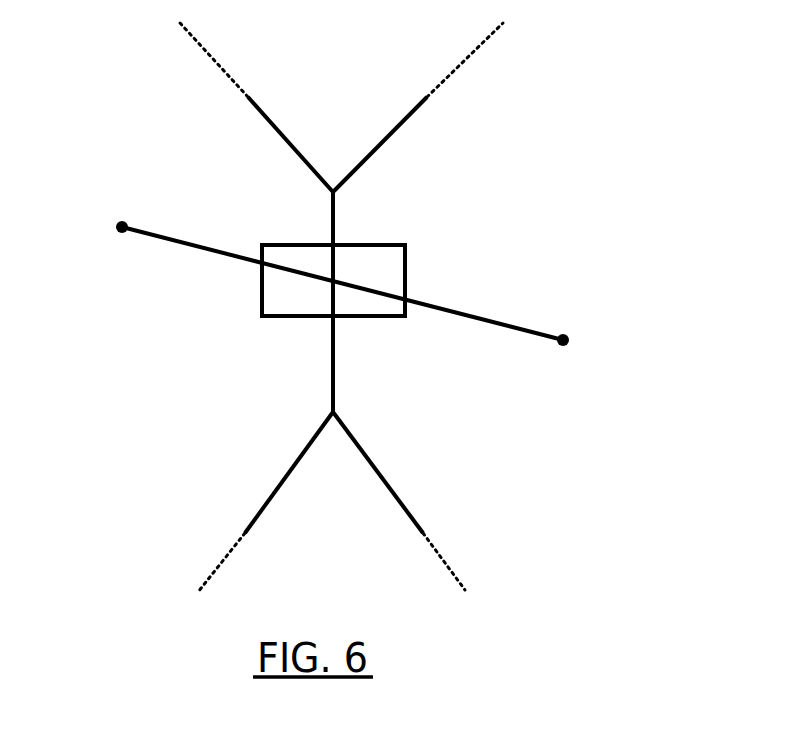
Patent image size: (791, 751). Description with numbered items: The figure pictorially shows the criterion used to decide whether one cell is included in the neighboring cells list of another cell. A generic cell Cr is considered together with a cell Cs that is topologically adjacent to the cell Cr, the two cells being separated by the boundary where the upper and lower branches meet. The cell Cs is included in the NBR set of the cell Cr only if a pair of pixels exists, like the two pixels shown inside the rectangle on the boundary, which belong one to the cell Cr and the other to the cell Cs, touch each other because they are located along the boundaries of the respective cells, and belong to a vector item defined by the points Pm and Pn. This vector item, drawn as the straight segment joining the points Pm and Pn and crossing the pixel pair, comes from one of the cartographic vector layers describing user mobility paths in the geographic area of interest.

The vector item endpoint Pm is at (317, 278).
The vector item endpoint Pn is at (583, 357).
The generic cell Cr is at (175, 140).
The topologically adjacent cell Cs is at (521, 480).